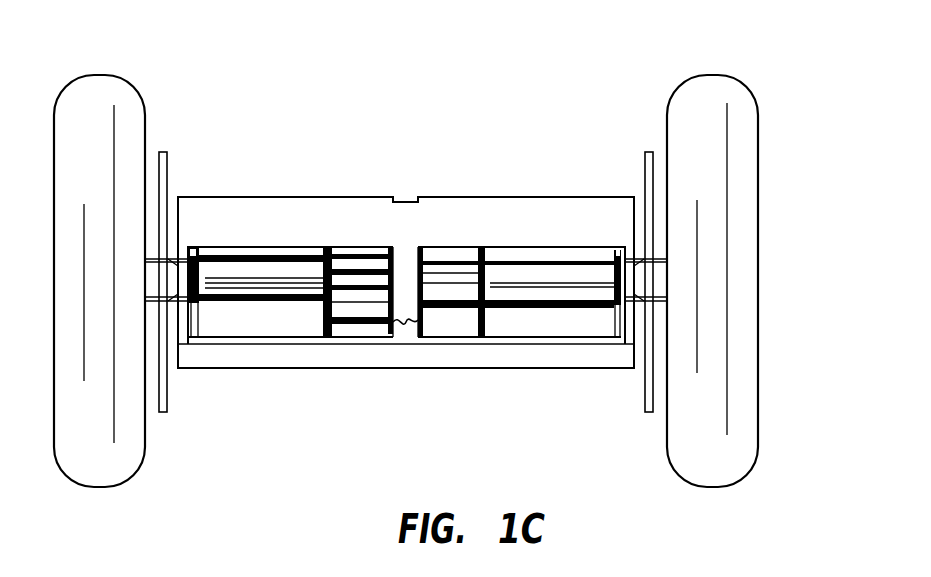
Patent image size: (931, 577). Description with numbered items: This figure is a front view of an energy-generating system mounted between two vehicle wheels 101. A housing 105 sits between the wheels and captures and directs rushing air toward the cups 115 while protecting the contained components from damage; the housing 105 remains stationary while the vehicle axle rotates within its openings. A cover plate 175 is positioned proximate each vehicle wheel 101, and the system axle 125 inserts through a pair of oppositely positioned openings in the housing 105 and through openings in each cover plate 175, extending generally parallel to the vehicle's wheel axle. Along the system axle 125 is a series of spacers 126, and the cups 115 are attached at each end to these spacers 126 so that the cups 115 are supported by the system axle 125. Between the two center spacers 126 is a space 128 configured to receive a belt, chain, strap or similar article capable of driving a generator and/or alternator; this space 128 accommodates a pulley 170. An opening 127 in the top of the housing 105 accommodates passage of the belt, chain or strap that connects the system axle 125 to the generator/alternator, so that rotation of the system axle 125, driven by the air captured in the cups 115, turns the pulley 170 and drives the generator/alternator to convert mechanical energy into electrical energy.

The vehicle wheel 101 is at (768, 150).
The housing 105 is at (273, 193).
The cup 115 is at (303, 323).
The system axle 125 is at (257, 278).
The spacer 126 is at (193, 330).
The opening 127 is at (408, 193).
The space 128 is at (405, 325).
The pulley 170 is at (413, 270).
The cover plate 175 is at (180, 163).